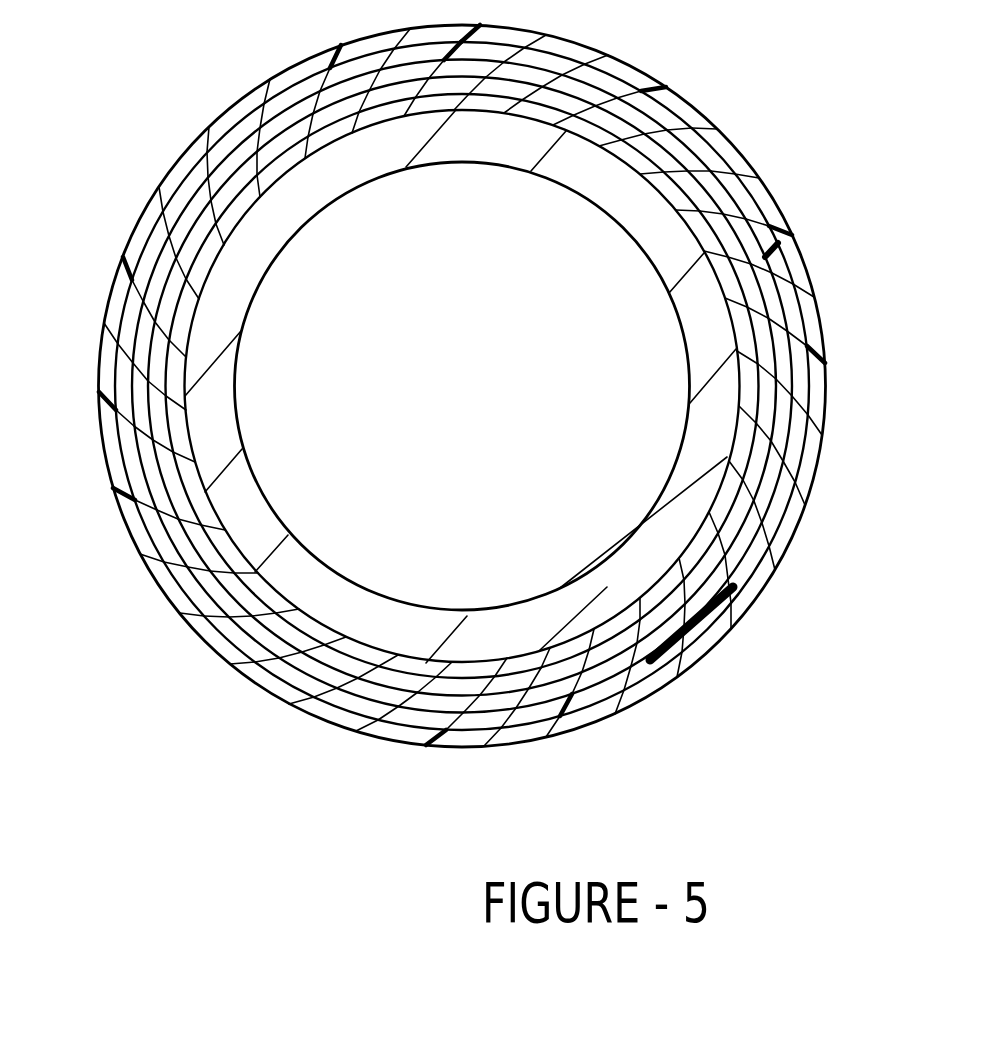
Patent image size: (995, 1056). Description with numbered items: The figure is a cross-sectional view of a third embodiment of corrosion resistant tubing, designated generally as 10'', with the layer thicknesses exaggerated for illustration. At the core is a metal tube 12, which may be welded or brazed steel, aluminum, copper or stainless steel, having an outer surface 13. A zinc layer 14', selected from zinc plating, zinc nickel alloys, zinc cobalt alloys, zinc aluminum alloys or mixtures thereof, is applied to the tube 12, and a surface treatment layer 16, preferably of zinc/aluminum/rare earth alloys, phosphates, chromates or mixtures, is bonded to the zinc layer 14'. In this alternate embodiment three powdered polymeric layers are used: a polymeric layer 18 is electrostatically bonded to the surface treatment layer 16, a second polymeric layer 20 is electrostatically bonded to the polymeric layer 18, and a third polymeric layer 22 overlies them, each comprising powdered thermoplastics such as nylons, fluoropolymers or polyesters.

The corrosion resistant tube 10'' is at (458, 430).
The metal tube 12 is at (228, 333).
The outer surface 13 is at (700, 250).
The zinc layer 14' is at (462, 386).
The surface treatment layer 16 is at (302, 640).
The polymeric layer 18 is at (203, 575).
The second polymeric layer 20 is at (265, 660).
The third polymeric layer 22 is at (363, 730).